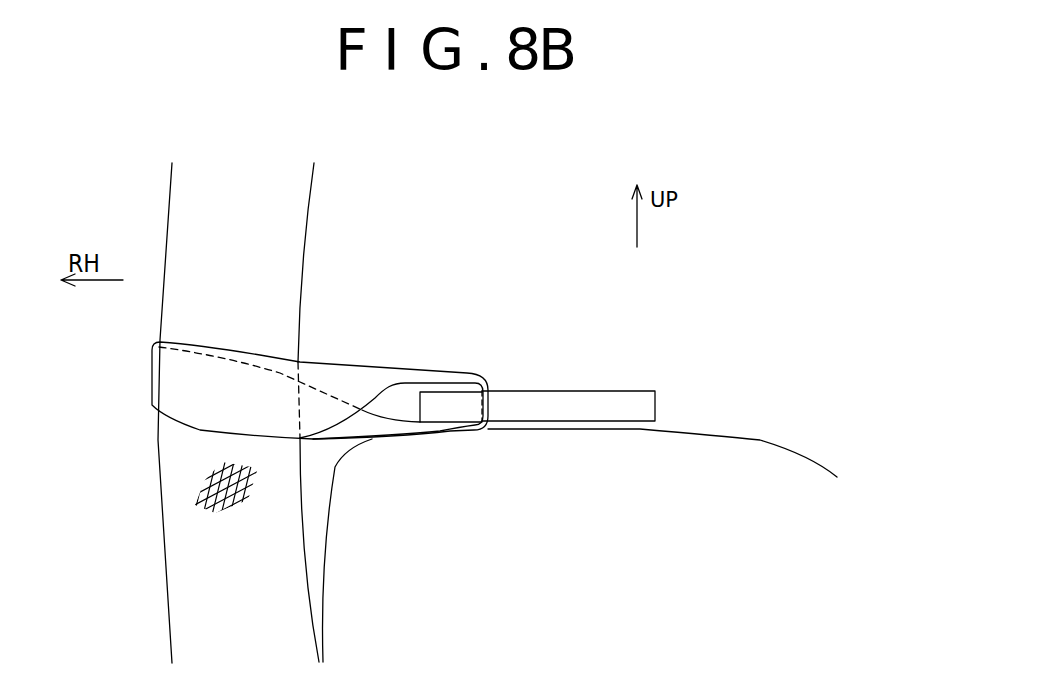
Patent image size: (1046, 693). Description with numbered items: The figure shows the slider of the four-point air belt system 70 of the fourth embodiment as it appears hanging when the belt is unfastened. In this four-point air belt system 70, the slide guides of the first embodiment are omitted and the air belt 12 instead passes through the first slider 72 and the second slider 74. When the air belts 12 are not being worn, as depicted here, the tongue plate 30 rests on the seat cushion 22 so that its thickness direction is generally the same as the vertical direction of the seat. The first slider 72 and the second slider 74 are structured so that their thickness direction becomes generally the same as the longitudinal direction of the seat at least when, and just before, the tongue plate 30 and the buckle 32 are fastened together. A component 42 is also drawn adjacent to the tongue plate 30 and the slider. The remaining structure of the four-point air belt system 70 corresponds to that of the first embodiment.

The air belt 12 is at (278, 240).
The seat cushion 22 is at (737, 450).
The tongue plate 30 is at (638, 385).
The buckle 32 is at (669, 385).
The inflator 42 is at (483, 403).
The four-point air belt system 70 is at (679, 322).
The first slider 72 is at (391, 468).
The second slider 74 is at (323, 447).